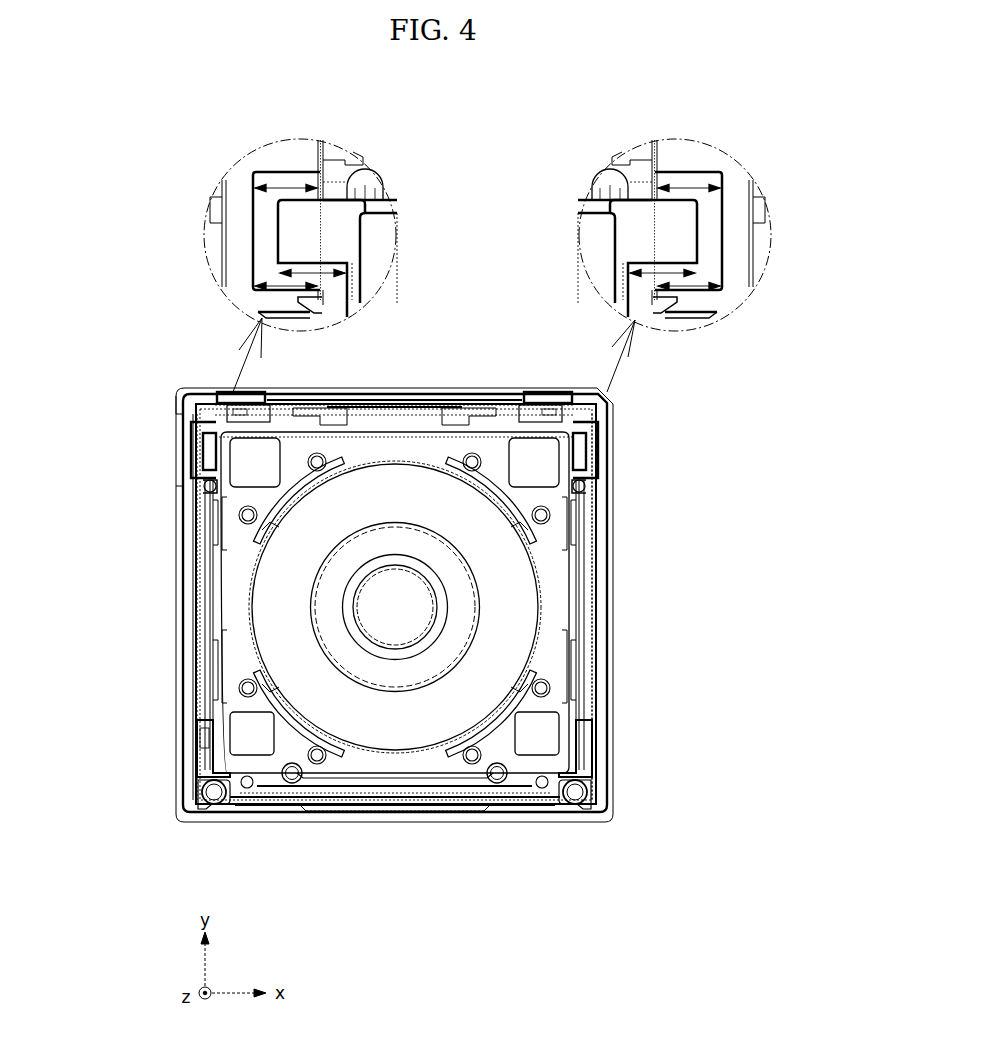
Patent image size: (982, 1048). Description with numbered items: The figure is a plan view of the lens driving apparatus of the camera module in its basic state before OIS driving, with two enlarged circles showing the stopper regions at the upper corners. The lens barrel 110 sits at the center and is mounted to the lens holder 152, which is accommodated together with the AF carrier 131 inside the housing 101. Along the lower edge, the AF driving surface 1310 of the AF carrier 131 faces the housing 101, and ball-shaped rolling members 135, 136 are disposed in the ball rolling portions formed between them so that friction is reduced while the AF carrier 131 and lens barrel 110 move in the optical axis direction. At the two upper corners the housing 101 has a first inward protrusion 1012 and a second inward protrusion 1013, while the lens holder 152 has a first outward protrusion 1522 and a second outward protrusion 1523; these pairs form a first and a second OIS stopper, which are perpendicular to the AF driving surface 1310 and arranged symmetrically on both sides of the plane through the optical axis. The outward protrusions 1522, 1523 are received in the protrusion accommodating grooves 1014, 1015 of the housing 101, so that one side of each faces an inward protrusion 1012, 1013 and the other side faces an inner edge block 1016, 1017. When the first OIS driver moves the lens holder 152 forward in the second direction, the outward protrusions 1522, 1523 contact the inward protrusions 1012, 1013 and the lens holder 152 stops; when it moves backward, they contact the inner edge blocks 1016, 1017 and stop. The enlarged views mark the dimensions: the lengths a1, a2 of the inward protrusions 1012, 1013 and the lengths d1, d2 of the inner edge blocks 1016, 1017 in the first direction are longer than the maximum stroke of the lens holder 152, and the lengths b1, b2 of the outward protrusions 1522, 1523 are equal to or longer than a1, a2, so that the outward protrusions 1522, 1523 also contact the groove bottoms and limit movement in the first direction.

The housing 101 is at (190, 660).
The lens barrel 110 is at (513, 627).
The AF carrier 131 is at (205, 755).
The rolling member 135 is at (216, 802).
The rolling member 136 is at (574, 802).
The lens holder 152 is at (497, 463).
The first inward protrusion 1012 is at (583, 485).
The second inward protrusion 1013 is at (225, 480).
The protrusion accommodating groove 1014 is at (603, 430).
The protrusion accommodating groove 1015 is at (215, 412).
The inner edge block 1016 is at (582, 402).
The inner edge block 1017 is at (205, 405).
The AF driving surface 1310 is at (355, 800).
The first outward protrusion 1522 is at (578, 448).
The second outward protrusion 1523 is at (213, 448).
The length of inward protrusion in first direction a1 is at (690, 293).
The length of inward protrusion in first direction a2 is at (312, 308).
The length of outward protrusion in first direction b1 is at (662, 262).
The length of outward protrusion in first direction b2 is at (313, 263).
The length of inner edge block in first direction d1 is at (687, 183).
The length of inner edge block in first direction d2 is at (287, 183).